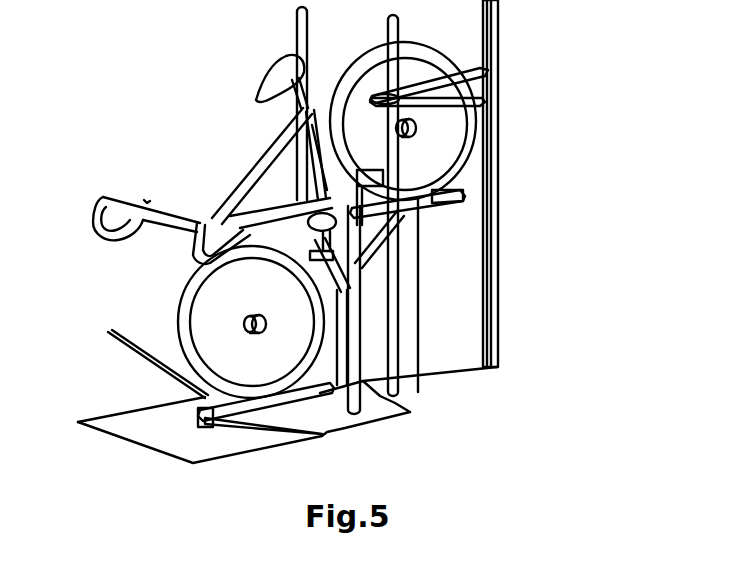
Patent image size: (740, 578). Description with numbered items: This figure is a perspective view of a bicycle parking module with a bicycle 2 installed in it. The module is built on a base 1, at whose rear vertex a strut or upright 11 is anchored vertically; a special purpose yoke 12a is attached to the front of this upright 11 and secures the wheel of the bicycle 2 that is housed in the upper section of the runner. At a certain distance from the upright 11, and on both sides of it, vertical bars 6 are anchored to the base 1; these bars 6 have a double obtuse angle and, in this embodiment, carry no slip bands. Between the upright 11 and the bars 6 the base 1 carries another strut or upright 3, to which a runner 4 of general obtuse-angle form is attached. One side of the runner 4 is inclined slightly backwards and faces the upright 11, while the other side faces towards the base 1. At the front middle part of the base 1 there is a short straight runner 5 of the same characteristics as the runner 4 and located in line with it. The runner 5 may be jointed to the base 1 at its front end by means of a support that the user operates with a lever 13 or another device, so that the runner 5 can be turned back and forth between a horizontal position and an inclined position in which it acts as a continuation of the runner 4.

The base 1 is at (153, 420).
The bicycle 2 is at (243, 183).
The strut or upright 3 is at (407, 303).
The runner 4 is at (440, 200).
The short straight runner 5 is at (317, 402).
The vertical bars 6 is at (388, 31).
The strut or upright 11 is at (495, 145).
The special purpose yoke 12a is at (480, 77).
The lever 13 is at (113, 333).